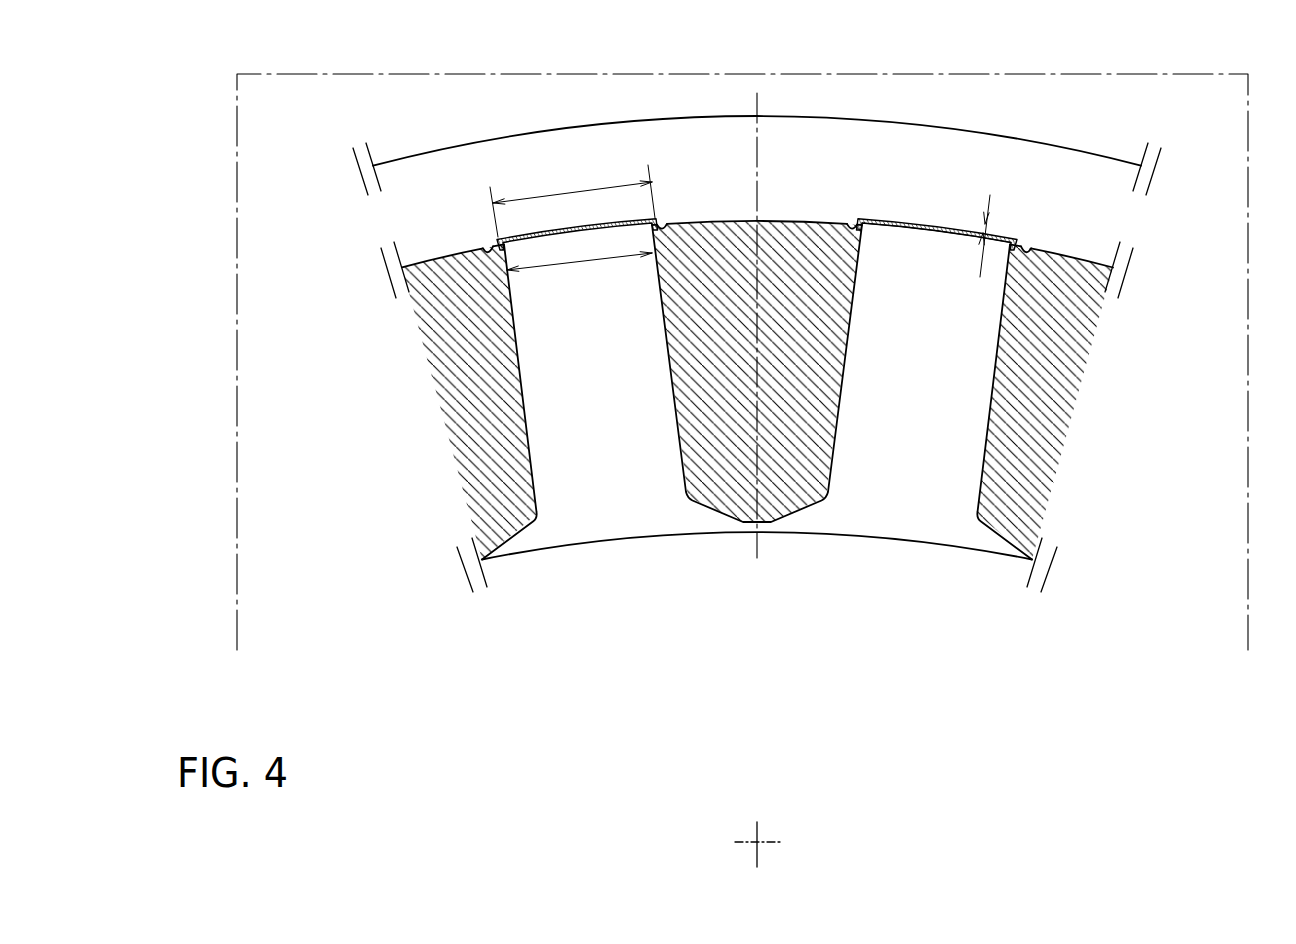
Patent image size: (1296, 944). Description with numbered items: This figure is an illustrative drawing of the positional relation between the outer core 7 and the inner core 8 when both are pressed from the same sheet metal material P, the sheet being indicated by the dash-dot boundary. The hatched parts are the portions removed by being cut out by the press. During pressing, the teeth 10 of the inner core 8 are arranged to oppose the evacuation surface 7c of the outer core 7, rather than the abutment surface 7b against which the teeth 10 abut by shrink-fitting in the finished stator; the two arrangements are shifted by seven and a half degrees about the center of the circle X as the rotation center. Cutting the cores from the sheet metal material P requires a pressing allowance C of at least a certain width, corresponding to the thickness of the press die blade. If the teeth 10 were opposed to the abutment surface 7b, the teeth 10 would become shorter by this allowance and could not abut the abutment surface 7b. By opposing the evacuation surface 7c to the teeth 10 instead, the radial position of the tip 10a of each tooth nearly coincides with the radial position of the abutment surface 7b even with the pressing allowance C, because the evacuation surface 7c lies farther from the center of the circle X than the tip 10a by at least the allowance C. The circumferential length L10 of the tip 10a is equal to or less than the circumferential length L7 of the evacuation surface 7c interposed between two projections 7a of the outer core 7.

The outer core 7 is at (1067, 162).
The projection 7a is at (850, 223).
The abutment surface 7b is at (778, 220).
The evacuation surface 7c is at (912, 220).
The inner core 8 is at (947, 525).
The teeth 10 is at (955, 383).
The tip of the teeth 10a is at (933, 233).
The pressing allowance C is at (988, 204).
The length of a circumferential direction of the evacuation surface L7 is at (572, 190).
The length of a circumferential direction of the tip of the teeth L10 is at (582, 262).
The sheet metal material P is at (1230, 107).
The center of the circle X is at (757, 842).